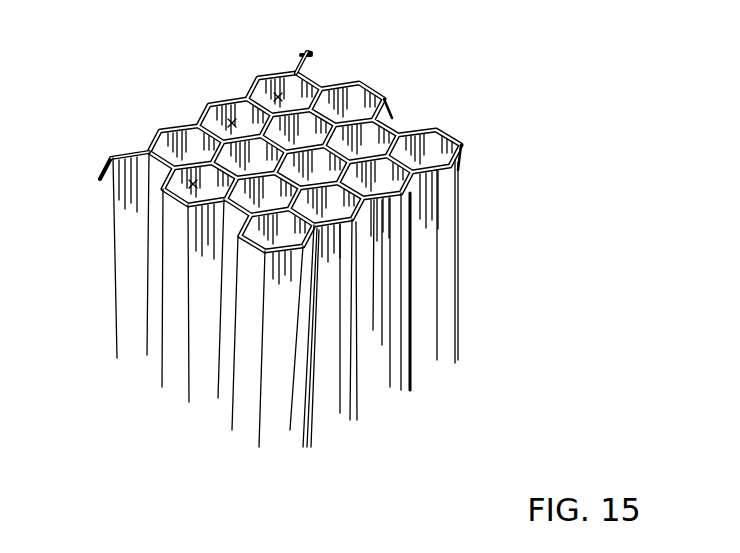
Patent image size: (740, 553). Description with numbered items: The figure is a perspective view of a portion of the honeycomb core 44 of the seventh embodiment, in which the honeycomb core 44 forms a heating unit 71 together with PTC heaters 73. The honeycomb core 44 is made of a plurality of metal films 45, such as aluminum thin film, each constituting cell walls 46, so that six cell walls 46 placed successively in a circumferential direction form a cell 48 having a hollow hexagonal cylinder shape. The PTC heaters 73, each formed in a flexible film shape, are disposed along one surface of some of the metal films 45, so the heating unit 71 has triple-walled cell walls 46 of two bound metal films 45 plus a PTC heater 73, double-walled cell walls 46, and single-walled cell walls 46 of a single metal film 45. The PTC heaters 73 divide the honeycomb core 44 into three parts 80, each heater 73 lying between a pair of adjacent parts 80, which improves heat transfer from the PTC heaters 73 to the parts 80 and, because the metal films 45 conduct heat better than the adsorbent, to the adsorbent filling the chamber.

The honeycomb core 44 is at (393, 123).
The metal film 45 is at (446, 133).
The cell wall 46 is at (185, 130).
The cell 48 is at (231, 118).
The heating unit 71 is at (290, 250).
The PTC heater 73 is at (322, 407).
The part 80 is at (201, 124).